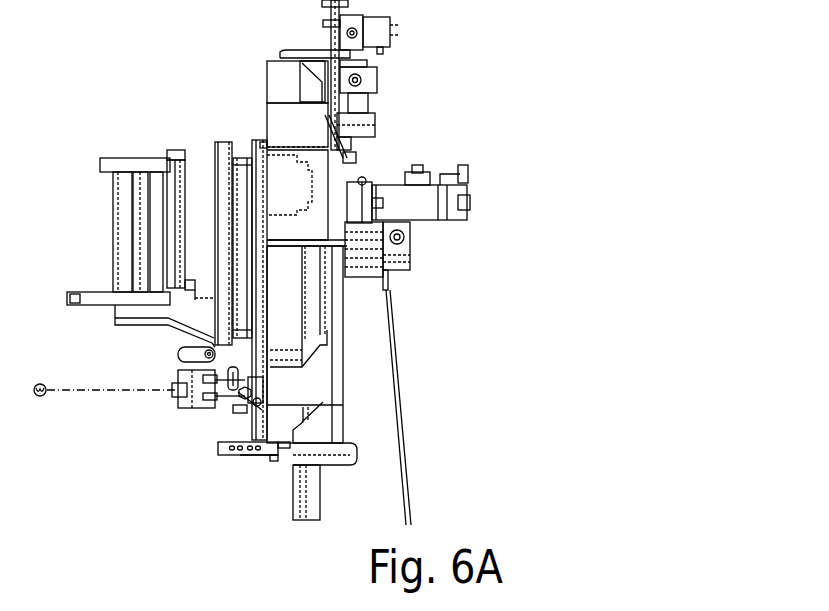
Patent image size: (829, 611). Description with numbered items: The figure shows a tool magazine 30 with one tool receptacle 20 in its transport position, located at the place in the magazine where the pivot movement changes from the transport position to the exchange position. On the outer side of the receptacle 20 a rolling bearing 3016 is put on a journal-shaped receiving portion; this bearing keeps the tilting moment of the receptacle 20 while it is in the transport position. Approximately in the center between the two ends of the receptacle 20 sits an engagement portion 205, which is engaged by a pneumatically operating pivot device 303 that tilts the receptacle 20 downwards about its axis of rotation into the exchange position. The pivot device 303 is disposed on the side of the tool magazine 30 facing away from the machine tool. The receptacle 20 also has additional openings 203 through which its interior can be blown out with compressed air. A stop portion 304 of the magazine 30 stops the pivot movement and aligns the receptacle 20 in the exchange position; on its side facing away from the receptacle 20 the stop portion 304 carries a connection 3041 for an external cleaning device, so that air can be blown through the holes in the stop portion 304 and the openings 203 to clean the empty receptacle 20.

The tool magazine 30 is at (398, 76).
The rolling bearing 3016 is at (254, 334).
The pivot device 303 is at (170, 330).
The receptacle 20 is at (178, 372).
The engagement portion 205 is at (195, 408).
The openings 203 is at (204, 416).
The stop portion 304 is at (223, 457).
The connection 3041 is at (247, 457).